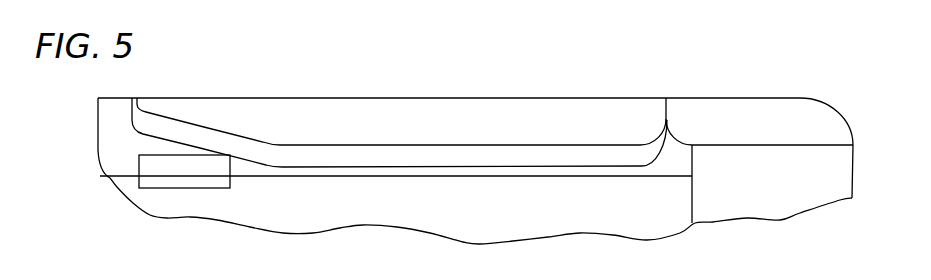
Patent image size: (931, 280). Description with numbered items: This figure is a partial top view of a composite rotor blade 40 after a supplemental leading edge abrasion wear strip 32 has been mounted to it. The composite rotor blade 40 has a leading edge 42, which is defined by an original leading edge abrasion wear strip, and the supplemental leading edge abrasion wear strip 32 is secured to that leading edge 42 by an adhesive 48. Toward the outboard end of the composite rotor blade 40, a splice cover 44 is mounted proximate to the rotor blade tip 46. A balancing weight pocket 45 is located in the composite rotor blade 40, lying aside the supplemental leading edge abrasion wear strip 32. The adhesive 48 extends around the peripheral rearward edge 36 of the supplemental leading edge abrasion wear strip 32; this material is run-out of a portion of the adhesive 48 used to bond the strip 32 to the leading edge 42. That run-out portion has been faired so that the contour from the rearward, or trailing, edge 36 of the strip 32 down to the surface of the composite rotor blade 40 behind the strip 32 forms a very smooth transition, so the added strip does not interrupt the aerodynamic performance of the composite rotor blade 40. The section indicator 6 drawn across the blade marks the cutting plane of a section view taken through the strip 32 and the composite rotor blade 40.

The supplemental leading edge abrasion wear strip 32 is at (307, 96).
The leading edge 42 is at (133, 98).
The adhesive 48 is at (360, 168).
The peripheral rearward edge 36 is at (607, 147).
The splice cover 44 is at (767, 121).
The rotor blade tip 46 is at (843, 178).
The balancing weight pocket 45 is at (143, 181).
The composite rotor blade 40 is at (193, 194).
The section line 6- 6 is at (602, 46).